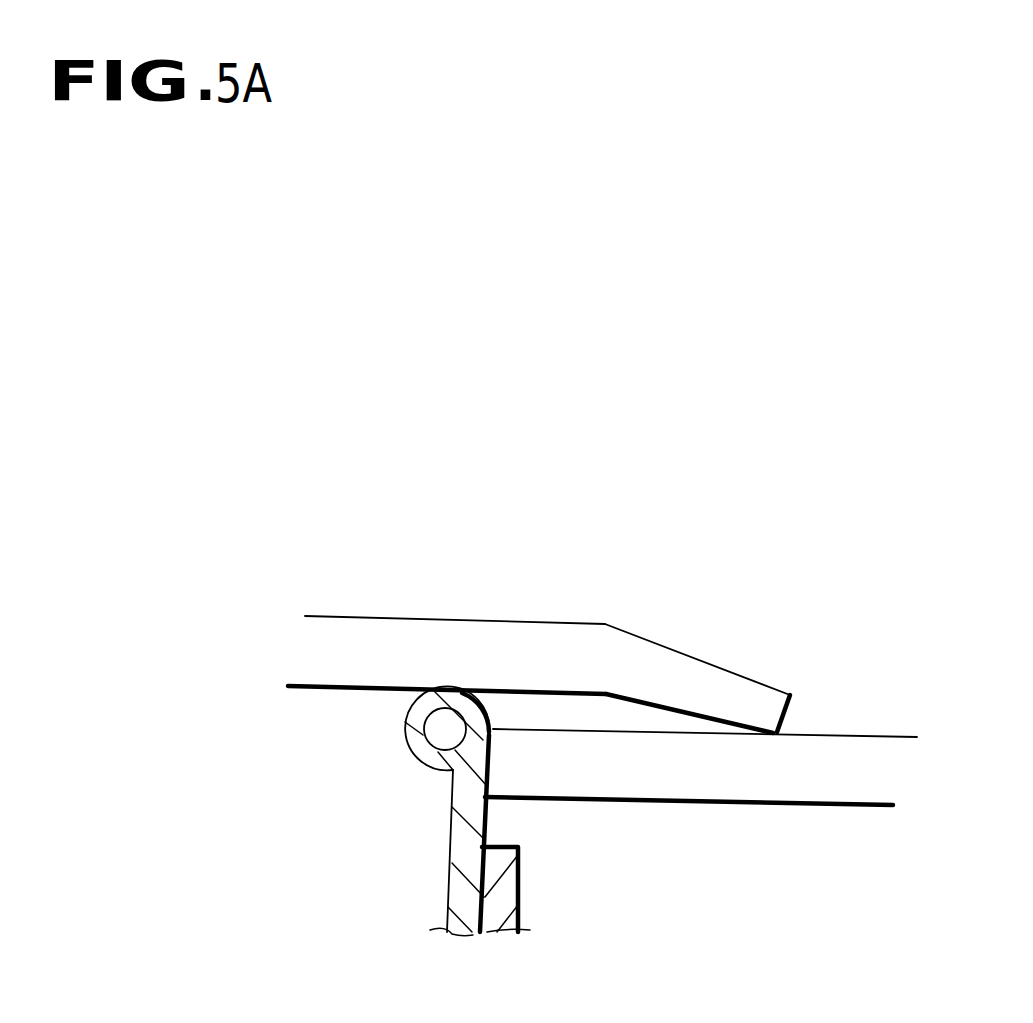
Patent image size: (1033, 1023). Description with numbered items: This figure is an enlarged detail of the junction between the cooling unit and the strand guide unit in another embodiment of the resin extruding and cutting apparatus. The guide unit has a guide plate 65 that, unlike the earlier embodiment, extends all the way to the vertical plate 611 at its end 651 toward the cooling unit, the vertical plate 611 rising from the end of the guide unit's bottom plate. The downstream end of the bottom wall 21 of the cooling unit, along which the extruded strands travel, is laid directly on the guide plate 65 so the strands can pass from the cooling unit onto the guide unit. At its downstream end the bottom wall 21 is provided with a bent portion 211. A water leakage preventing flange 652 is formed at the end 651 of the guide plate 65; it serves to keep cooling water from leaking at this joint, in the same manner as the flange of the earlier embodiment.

The bottom wall 21 is at (467, 647).
The bent portion 211 is at (703, 680).
The guide plate 65 is at (840, 752).
The end of the guide plate 651 is at (478, 777).
The water leakage preventing flange 652 is at (478, 832).
The vertical plate 611 is at (517, 918).